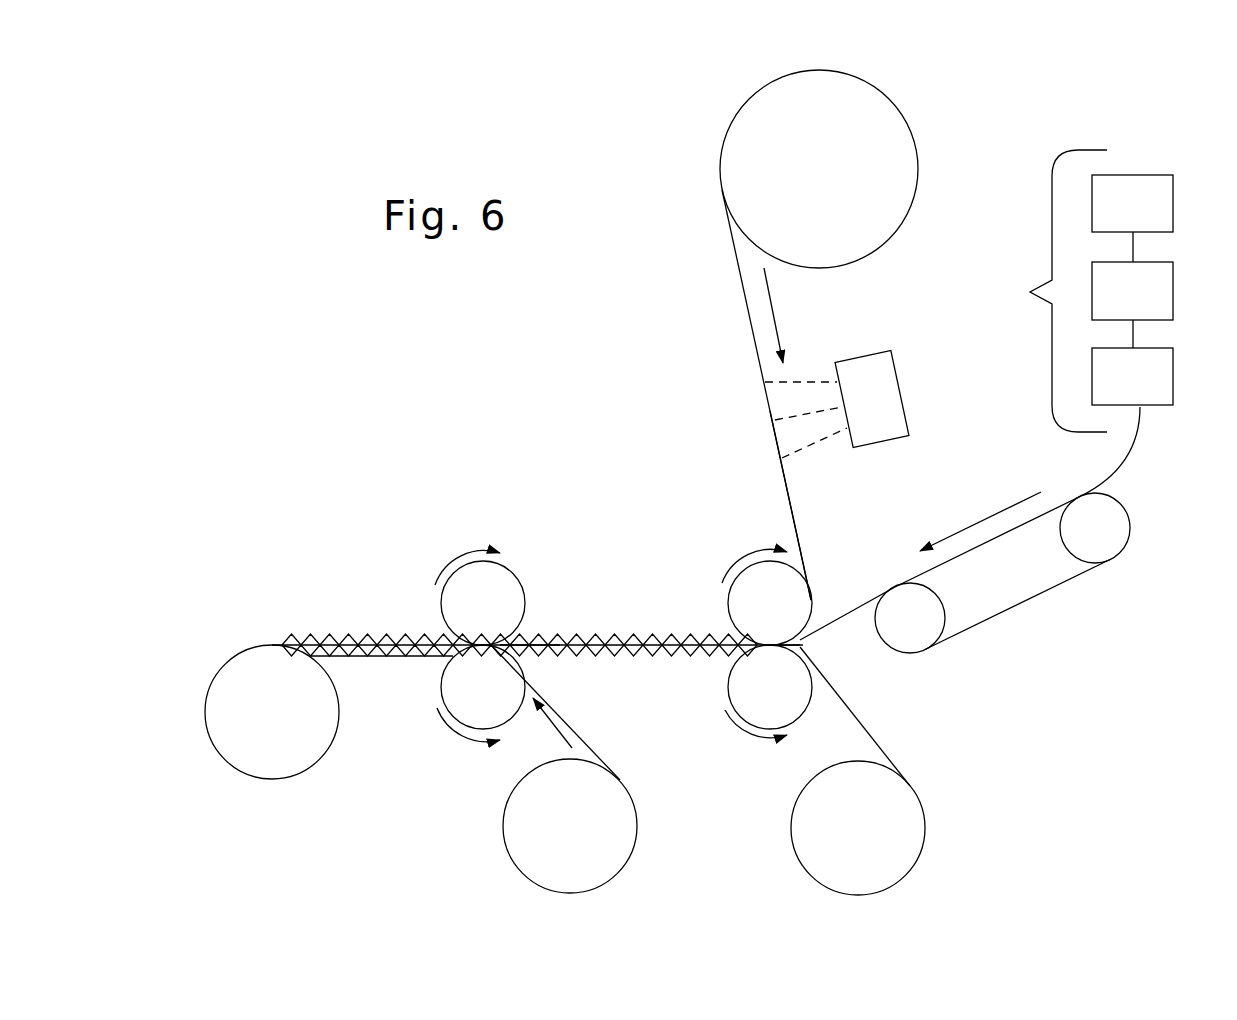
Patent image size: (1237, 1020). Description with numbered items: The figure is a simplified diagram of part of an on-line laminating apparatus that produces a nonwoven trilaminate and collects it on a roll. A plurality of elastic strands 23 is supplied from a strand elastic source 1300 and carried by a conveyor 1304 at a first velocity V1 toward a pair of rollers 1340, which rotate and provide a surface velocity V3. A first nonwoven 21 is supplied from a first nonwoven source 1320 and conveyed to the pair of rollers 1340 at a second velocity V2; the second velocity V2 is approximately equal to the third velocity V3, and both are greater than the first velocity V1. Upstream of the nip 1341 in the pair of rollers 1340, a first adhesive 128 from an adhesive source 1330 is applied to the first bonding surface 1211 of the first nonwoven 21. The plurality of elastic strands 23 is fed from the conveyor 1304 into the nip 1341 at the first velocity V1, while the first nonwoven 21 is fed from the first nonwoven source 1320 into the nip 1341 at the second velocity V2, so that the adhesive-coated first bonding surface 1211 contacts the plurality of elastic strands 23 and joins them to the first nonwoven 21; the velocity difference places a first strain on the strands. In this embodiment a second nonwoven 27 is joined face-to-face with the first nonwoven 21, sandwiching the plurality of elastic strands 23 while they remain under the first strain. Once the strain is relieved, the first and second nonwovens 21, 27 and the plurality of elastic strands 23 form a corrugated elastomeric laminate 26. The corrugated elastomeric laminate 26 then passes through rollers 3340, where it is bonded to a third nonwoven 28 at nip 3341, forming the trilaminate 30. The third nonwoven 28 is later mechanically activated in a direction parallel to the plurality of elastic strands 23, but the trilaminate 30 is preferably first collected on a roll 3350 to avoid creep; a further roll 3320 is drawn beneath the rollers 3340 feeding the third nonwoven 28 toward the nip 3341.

The first nonwoven source 1320 is at (885, 78).
The first nonwoven 21 is at (745, 297).
The second velocity V2 is at (773, 298).
The adhesive source 1330 is at (900, 387).
The first adhesive 128 is at (790, 382).
The first bonding surface 1211 is at (795, 505).
The strand elastic source 1300 is at (1063, 291).
The conveyor 1304 is at (1020, 607).
The first velocity V1 is at (964, 527).
The plurality of elastic strands 23 is at (837, 615).
The pair of rollers 1340 is at (796, 620).
The nip 1341 is at (805, 648).
The second nonwoven 27 is at (877, 738).
The corrugated elastomeric laminate 26 is at (650, 650).
The nip 3341 is at (530, 632).
The rollers 3340 is at (509, 620).
The trilaminate 30 is at (350, 640).
The roll 3350 is at (237, 732).
The third nonwoven 28 is at (590, 742).
The unwind roll 3320 is at (535, 843).
The third velocity V3 is at (735, 560).